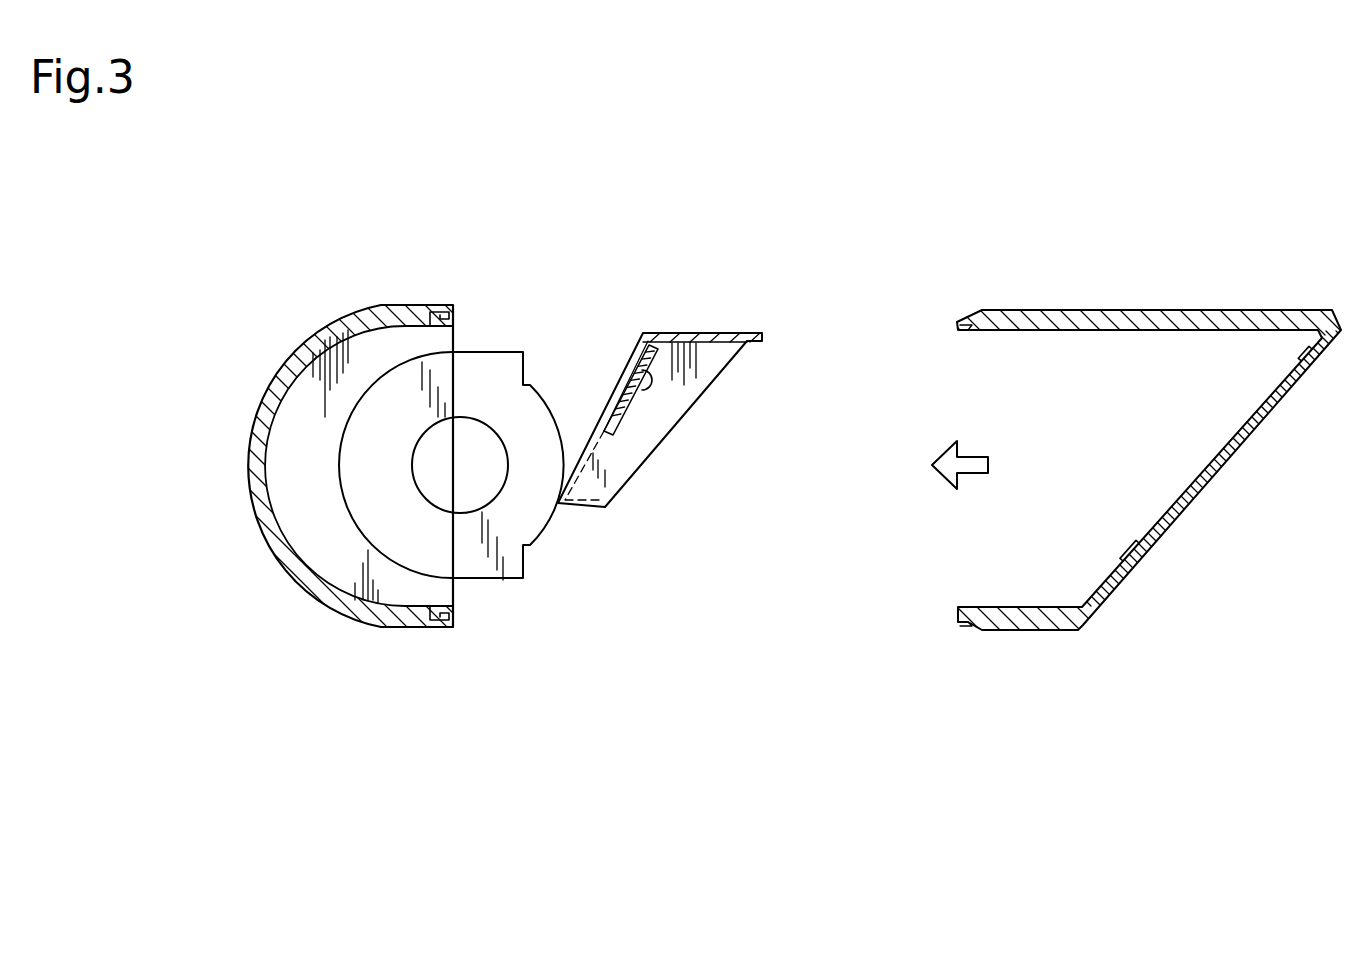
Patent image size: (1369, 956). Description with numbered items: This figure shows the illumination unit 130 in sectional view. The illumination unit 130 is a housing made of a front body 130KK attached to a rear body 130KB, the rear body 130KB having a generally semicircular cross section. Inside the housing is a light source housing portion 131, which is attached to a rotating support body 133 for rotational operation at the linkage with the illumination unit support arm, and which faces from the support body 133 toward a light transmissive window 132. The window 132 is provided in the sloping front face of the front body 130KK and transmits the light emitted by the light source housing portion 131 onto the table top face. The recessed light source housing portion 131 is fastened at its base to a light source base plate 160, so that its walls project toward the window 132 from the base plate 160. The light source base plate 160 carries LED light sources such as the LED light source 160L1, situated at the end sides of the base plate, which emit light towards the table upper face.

The illumination unit 130 is at (360, 307).
The rear body 130KB is at (386, 424).
The front body 130KK is at (1077, 443).
The light source housing portion 131 is at (700, 332).
The light transmissive window 132 is at (1177, 515).
The rotating support body 133 is at (493, 583).
The light source base plate 160 is at (758, 421).
The LED light source 160L1 is at (652, 380).